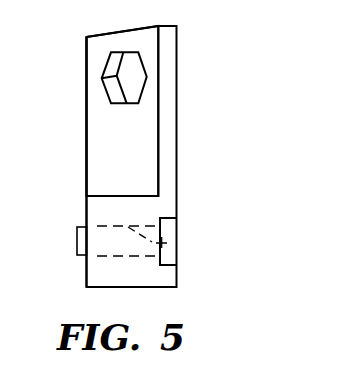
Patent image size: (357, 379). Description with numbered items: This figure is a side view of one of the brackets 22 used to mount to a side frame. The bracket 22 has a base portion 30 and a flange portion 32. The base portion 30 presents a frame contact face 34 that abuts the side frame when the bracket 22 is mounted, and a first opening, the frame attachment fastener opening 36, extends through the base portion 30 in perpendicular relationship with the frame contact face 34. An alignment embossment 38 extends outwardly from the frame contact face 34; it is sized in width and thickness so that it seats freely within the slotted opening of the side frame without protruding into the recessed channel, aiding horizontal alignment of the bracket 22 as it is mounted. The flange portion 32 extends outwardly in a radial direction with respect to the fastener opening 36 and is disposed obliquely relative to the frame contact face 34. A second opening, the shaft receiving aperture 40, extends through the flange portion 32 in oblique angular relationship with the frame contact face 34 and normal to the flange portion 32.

The bracket 22 is at (229, 30).
The base portion 30 is at (105, 257).
The flange portion 32 is at (152, 128).
The frame contact face 34 is at (86, 210).
The frame attachment fastener opening 36 is at (167, 243).
The alignment embossment 38 is at (77, 240).
The shaft receiving aperture 40 is at (101, 79).